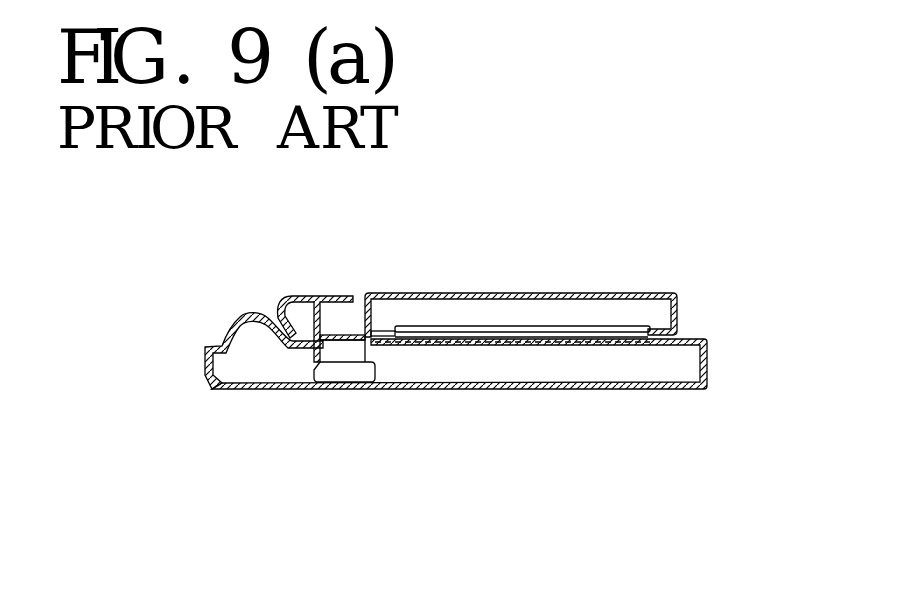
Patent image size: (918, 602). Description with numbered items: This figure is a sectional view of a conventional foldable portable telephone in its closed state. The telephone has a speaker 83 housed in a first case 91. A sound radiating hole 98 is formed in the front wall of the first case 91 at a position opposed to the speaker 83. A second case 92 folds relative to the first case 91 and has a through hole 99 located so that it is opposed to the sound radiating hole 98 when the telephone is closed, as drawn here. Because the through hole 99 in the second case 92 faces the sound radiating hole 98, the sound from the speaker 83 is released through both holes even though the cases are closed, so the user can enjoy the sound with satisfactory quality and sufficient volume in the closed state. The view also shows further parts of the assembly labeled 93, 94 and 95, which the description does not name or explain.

The first case 91 is at (707, 357).
The second case 92 is at (678, 307).
The cover 93 is at (245, 335).
The sealing member 94 is at (418, 346).
The substrate 95 is at (518, 330).
The sound radiating hole 98 is at (322, 370).
The through hole 99 is at (358, 297).
The speaker 83 is at (348, 372).